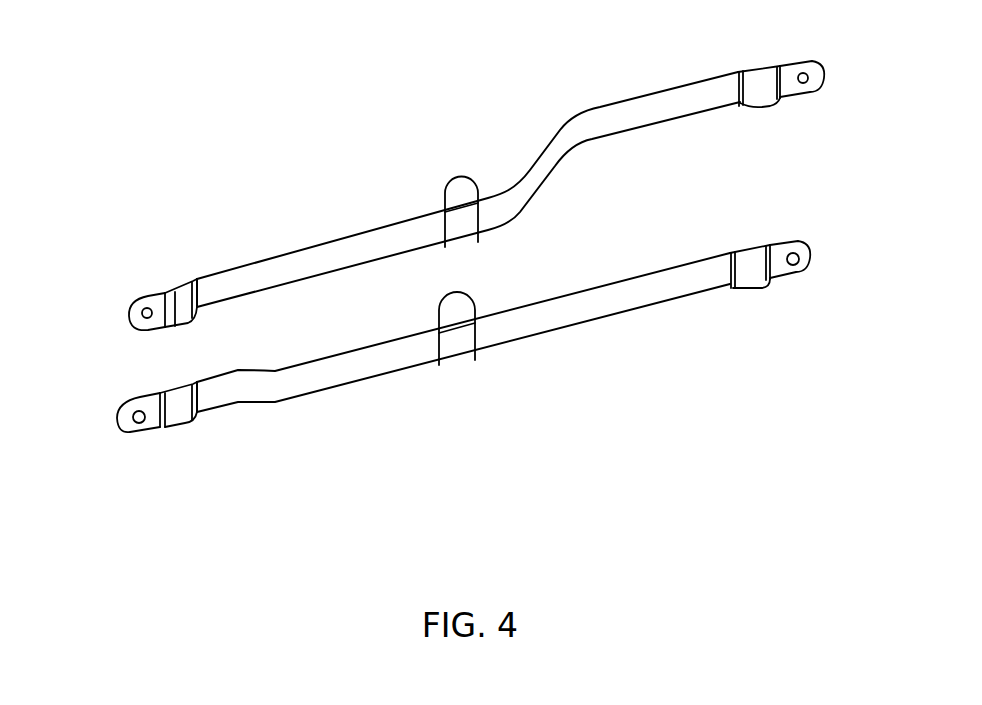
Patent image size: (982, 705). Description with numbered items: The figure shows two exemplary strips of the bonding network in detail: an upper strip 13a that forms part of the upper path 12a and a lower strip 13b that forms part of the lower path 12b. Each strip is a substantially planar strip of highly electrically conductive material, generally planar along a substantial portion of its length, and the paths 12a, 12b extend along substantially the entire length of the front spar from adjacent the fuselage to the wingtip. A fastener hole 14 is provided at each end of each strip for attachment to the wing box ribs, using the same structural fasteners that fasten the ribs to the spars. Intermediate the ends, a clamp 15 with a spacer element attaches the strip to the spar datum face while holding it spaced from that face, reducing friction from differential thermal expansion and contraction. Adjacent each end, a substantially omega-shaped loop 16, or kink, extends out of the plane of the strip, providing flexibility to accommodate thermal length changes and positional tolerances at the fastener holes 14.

The upper path 12a is at (476, 159).
The lower path 12b is at (463, 406).
The upper strip 13a is at (675, 95).
The lower strip 13b is at (660, 295).
The fastener hole 14 is at (148, 305).
The clamp 15 is at (459, 193).
The omega-shaped loop 16 is at (190, 291).